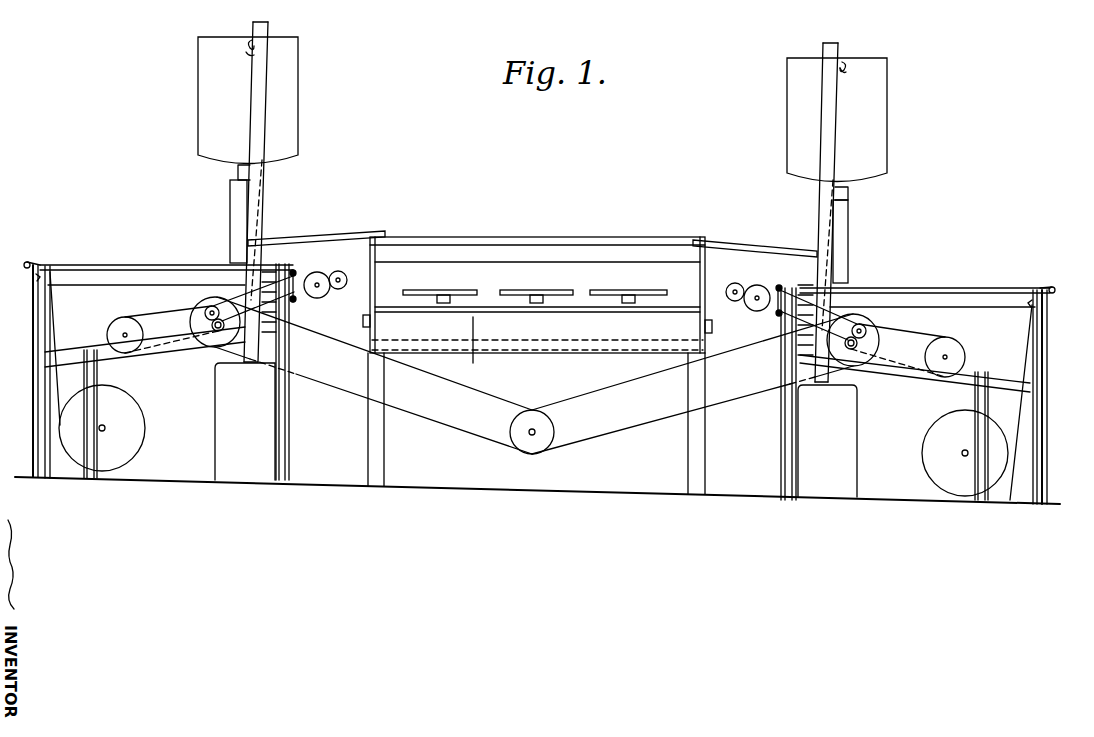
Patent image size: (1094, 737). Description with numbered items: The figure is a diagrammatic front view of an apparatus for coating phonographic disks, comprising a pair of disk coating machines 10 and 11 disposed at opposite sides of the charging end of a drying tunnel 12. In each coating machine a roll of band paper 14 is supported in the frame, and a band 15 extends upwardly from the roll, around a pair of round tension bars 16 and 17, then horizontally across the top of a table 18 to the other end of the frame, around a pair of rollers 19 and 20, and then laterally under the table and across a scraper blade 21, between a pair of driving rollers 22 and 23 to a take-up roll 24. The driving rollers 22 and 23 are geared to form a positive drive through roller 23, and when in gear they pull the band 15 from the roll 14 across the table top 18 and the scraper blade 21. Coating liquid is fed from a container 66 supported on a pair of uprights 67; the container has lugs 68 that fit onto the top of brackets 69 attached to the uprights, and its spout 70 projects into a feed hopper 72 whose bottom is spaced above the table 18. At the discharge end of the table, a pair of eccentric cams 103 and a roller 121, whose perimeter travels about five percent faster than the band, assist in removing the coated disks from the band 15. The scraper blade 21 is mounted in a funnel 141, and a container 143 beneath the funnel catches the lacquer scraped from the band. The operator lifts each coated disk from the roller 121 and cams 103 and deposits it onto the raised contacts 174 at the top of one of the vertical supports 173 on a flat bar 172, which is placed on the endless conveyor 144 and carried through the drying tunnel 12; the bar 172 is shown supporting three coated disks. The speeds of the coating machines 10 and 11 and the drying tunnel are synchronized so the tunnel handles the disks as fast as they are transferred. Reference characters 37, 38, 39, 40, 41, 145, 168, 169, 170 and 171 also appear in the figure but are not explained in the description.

The phonographic disk coating machine 10 is at (125, 265).
The phonographic disk coating machine 11 is at (938, 285).
The drying tunnel 12 is at (537, 348).
The roll of band paper 14 is at (145, 424).
The band 15 is at (53, 390).
The round tension bar 16 is at (36, 277).
The round tension bar 17 is at (26, 262).
The table 18 is at (156, 264).
The roller 19 is at (295, 272).
The roller 20 is at (296, 301).
The scraper blade 21 is at (266, 272).
The driving roller 22 is at (216, 332).
The driving roller 23 is at (206, 309).
The take-up roll 24 is at (115, 322).
The main drive pulley 37 is at (530, 435).
The drive belt 38 is at (534, 388).
The drive belt 39 is at (545, 452).
The belt run 40 is at (316, 381).
The table belt 41 is at (186, 328).
The container 66 is at (298, 134).
The upright 67 is at (254, 100).
The lug 68 is at (250, 42).
The bracket 69 is at (246, 53).
The spout 70 is at (238, 174).
The feed hopper 72 is at (230, 207).
The eccentric cam 103 is at (325, 295).
The roller 121 is at (344, 265).
The funnel 141 is at (250, 365).
The container 143 is at (215, 452).
The endless conveyor 144 is at (393, 300).
The bottom plate 145 is at (558, 350).
The deflector 168 is at (425, 345).
The partition 169 is at (490, 348).
The cover 170 is at (503, 237).
The top rail 171 is at (346, 233).
The flat bar 172 is at (489, 306).
The vertical support 173 is at (437, 300).
The raised contact 174 is at (531, 300).